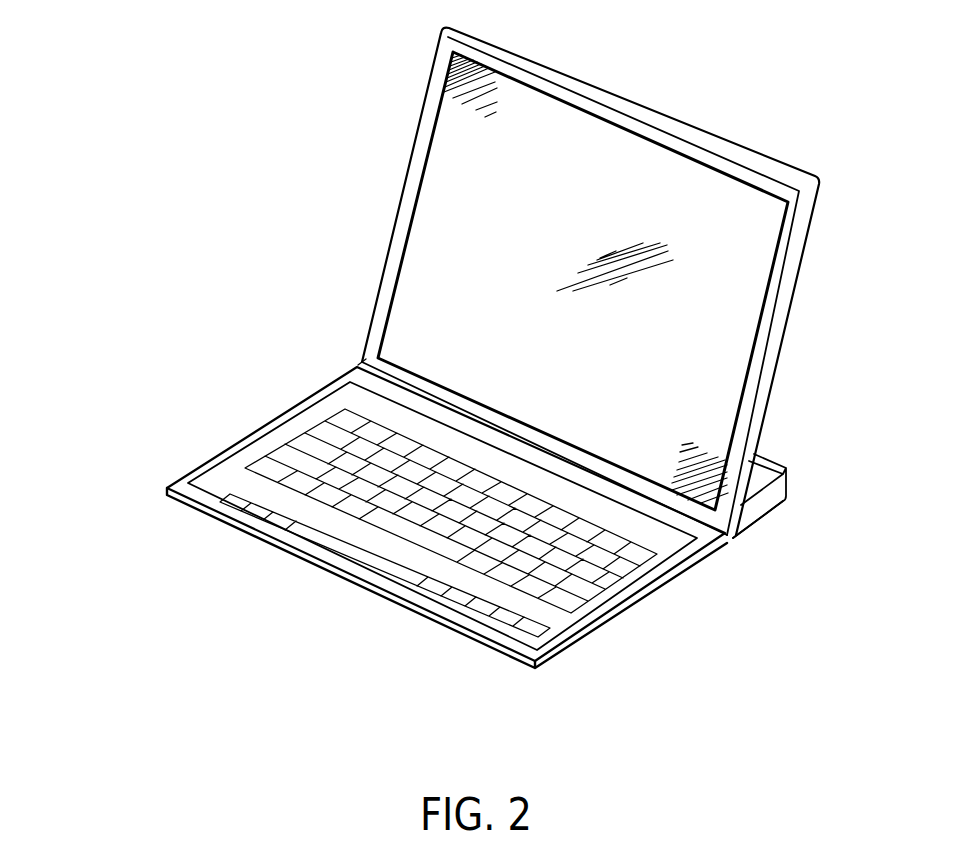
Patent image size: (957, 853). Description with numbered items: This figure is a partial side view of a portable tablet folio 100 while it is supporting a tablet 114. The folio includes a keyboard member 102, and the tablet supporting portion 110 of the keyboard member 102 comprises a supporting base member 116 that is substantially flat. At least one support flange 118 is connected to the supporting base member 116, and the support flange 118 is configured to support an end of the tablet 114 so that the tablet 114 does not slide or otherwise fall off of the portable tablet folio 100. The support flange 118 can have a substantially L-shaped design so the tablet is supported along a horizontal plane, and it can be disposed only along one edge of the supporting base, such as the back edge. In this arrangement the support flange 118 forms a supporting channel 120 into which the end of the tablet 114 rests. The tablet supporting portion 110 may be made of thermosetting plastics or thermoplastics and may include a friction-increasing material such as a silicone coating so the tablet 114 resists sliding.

The portable tablet folio 100 is at (183, 284).
The keyboard member 102 is at (255, 420).
The tablet supporting portion 110 is at (803, 510).
The tablet 114 is at (466, 188).
The supporting base member 116 is at (753, 523).
The support flange 118 is at (786, 468).
The supporting channel 120 is at (353, 357).